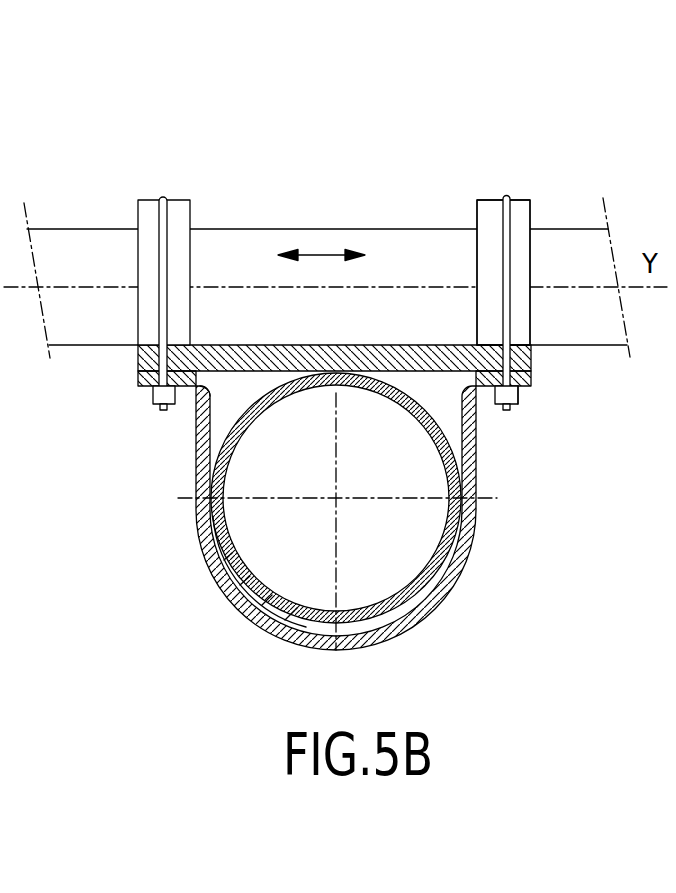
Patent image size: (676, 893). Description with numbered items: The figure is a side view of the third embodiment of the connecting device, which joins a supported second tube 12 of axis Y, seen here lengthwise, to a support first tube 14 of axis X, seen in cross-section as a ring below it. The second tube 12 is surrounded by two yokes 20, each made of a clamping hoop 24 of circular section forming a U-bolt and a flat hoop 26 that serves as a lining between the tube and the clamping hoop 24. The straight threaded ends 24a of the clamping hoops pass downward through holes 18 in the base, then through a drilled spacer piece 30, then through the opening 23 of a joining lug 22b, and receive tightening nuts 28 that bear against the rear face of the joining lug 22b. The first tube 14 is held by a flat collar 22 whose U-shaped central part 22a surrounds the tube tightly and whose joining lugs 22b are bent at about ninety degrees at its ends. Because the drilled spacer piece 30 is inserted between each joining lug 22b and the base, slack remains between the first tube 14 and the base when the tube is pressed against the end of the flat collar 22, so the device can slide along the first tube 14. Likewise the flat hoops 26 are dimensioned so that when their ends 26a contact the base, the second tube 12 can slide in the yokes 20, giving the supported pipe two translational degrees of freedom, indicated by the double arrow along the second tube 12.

The second tube 12 is at (307, 228).
The first tube 14 is at (287, 592).
The holes 18 is at (140, 352).
The yoke 20 is at (131, 190).
The flat collar 22 is at (478, 583).
The U-shaped central part 22a is at (218, 583).
The joining lugs 22b is at (188, 400).
The opening 23 is at (152, 402).
The clamping hoop 24 is at (502, 194).
The threaded ends 24a is at (531, 368).
The flat hoop 26 is at (517, 221).
The ends of the flat hoop 26a is at (493, 337).
The tightening nut 28 is at (517, 405).
The drilled spacer piece 30 is at (137, 380).